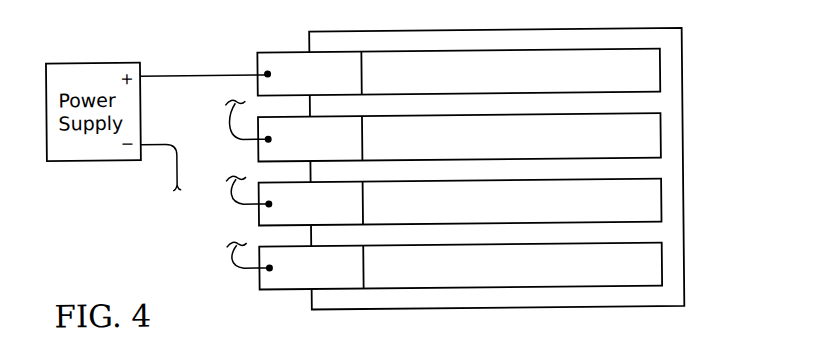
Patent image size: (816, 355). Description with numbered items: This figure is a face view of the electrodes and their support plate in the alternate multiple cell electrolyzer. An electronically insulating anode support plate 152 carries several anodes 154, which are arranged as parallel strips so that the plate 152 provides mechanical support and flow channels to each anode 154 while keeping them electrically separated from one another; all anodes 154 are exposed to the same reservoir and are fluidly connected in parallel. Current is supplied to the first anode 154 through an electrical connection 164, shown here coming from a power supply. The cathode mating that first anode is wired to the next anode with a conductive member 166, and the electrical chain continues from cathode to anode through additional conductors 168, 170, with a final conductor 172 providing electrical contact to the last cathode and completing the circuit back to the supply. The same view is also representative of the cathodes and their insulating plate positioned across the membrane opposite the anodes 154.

The anode support 152 is at (684, 38).
The anode 154 is at (661, 75).
The electrical connection 164 is at (213, 72).
The conductive member 166 is at (232, 118).
The conductor 168 is at (243, 201).
The conductor 170 is at (243, 265).
The conductor 172 is at (177, 168).